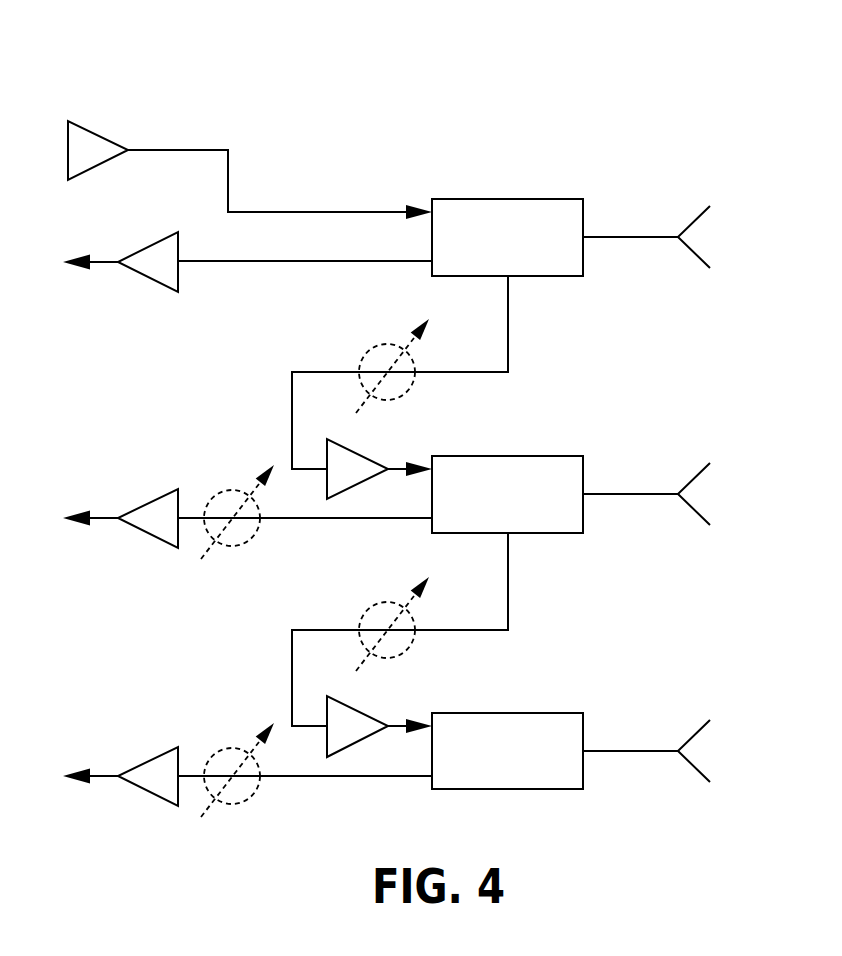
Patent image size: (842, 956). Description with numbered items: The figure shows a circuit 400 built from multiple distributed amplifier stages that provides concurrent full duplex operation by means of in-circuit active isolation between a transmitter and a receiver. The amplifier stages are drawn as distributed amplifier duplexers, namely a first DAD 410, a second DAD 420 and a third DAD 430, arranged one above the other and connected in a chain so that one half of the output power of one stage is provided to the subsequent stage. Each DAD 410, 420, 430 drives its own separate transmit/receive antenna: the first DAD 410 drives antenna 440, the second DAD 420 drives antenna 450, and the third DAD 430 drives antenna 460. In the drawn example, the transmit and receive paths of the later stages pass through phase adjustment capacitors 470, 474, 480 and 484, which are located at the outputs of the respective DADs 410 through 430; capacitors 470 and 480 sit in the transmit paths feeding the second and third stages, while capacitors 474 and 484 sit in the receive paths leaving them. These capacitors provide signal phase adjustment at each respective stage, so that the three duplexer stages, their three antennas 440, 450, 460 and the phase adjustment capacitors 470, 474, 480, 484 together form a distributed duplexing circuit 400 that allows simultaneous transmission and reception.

The circuit 400 is at (758, 82).
The distributed amplifier duplexer 410 is at (508, 199).
The distributed amplifier duplexer 420 is at (508, 456).
The distributed amplifier duplexer 430 is at (508, 713).
The transmit/receive antenna 440 is at (694, 221).
The transmit/receive antenna 450 is at (694, 478).
The transmit/receive antenna 460 is at (694, 736).
The phase adjustment capacitor 470 is at (367, 353).
The phase adjustment capacitor 474 is at (232, 490).
The phase adjustment capacitor 480 is at (367, 610).
The phase adjustment capacitor 484 is at (232, 748).